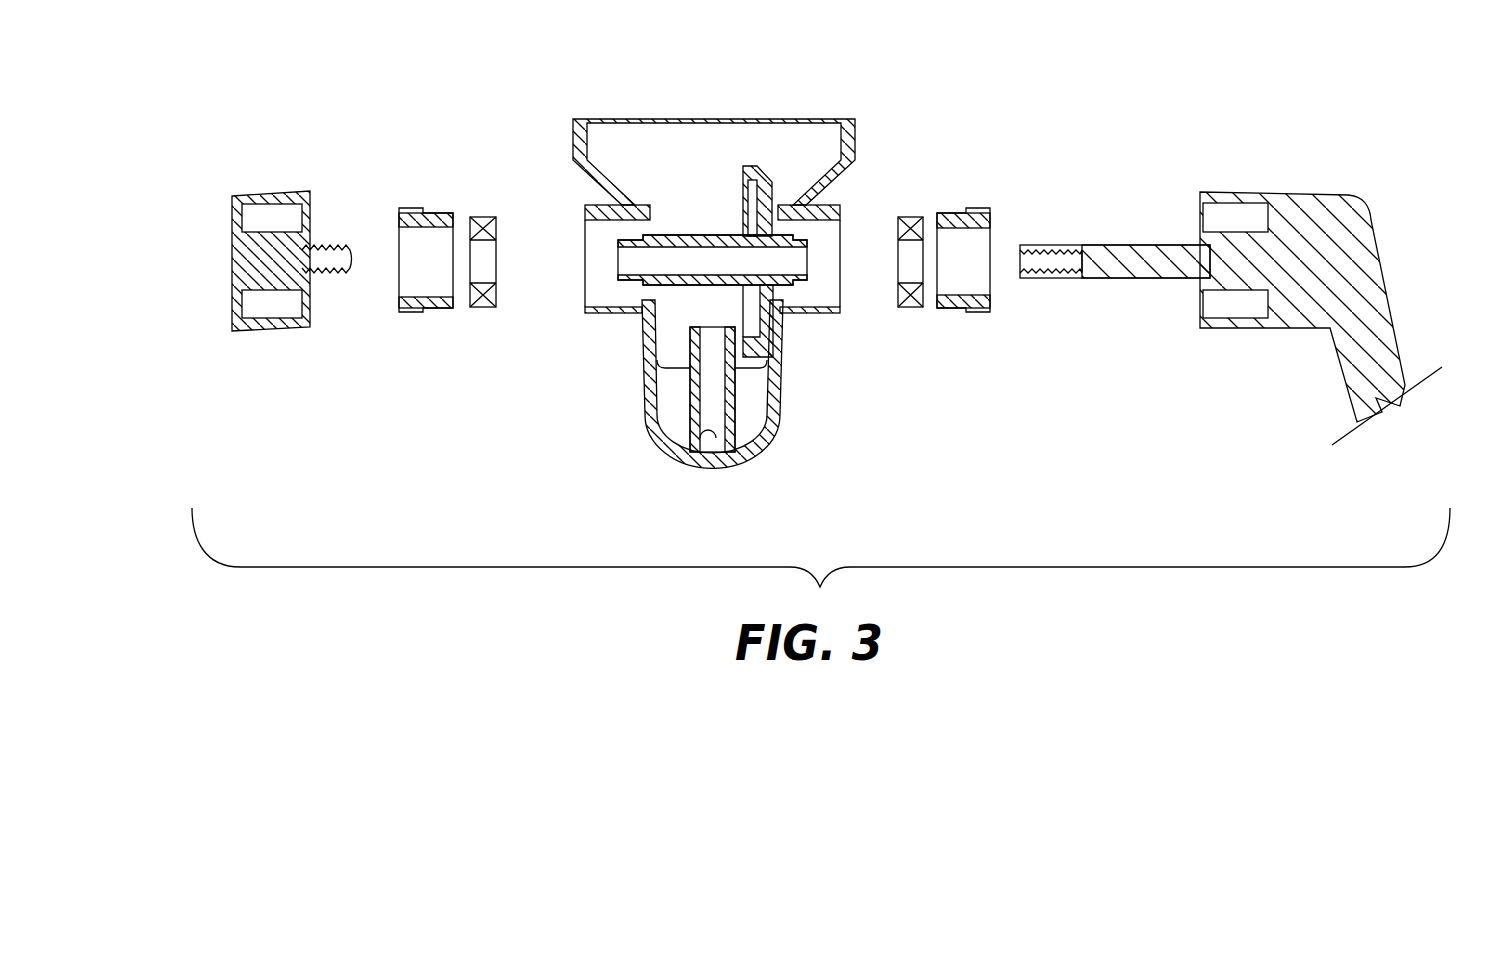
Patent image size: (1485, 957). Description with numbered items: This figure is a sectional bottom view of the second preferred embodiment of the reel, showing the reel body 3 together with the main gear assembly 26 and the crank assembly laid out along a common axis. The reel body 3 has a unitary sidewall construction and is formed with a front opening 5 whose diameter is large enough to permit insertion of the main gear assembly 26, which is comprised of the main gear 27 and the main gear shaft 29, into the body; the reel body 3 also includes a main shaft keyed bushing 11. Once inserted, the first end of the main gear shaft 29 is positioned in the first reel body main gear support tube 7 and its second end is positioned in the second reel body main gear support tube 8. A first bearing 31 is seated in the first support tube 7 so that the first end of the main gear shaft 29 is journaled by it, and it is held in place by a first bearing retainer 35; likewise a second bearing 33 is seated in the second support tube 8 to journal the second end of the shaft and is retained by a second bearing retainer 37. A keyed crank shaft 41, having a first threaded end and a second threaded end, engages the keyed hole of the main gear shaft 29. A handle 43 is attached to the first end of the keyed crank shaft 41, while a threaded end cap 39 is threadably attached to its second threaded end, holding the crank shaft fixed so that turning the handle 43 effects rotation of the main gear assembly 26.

The reel body 3 is at (797, 418).
The front opening 5 is at (634, 128).
The first reel body main gear support tube 7 is at (840, 312).
The second reel body main gear support tube 8 is at (586, 310).
The main shaft keyed bushing 11 is at (715, 438).
The main gear assembly 26 is at (693, 196).
The main gear 27 is at (762, 166).
The main gear shaft 29 is at (632, 265).
The first bearing 31 is at (909, 308).
The second bearing 33 is at (477, 217).
The first bearing retainer 35 is at (977, 208).
The second bearing retainer 37 is at (402, 310).
The threaded end cap 39 is at (287, 192).
The keyed crank shaft 41 is at (1130, 245).
The handle 43 is at (1325, 213).